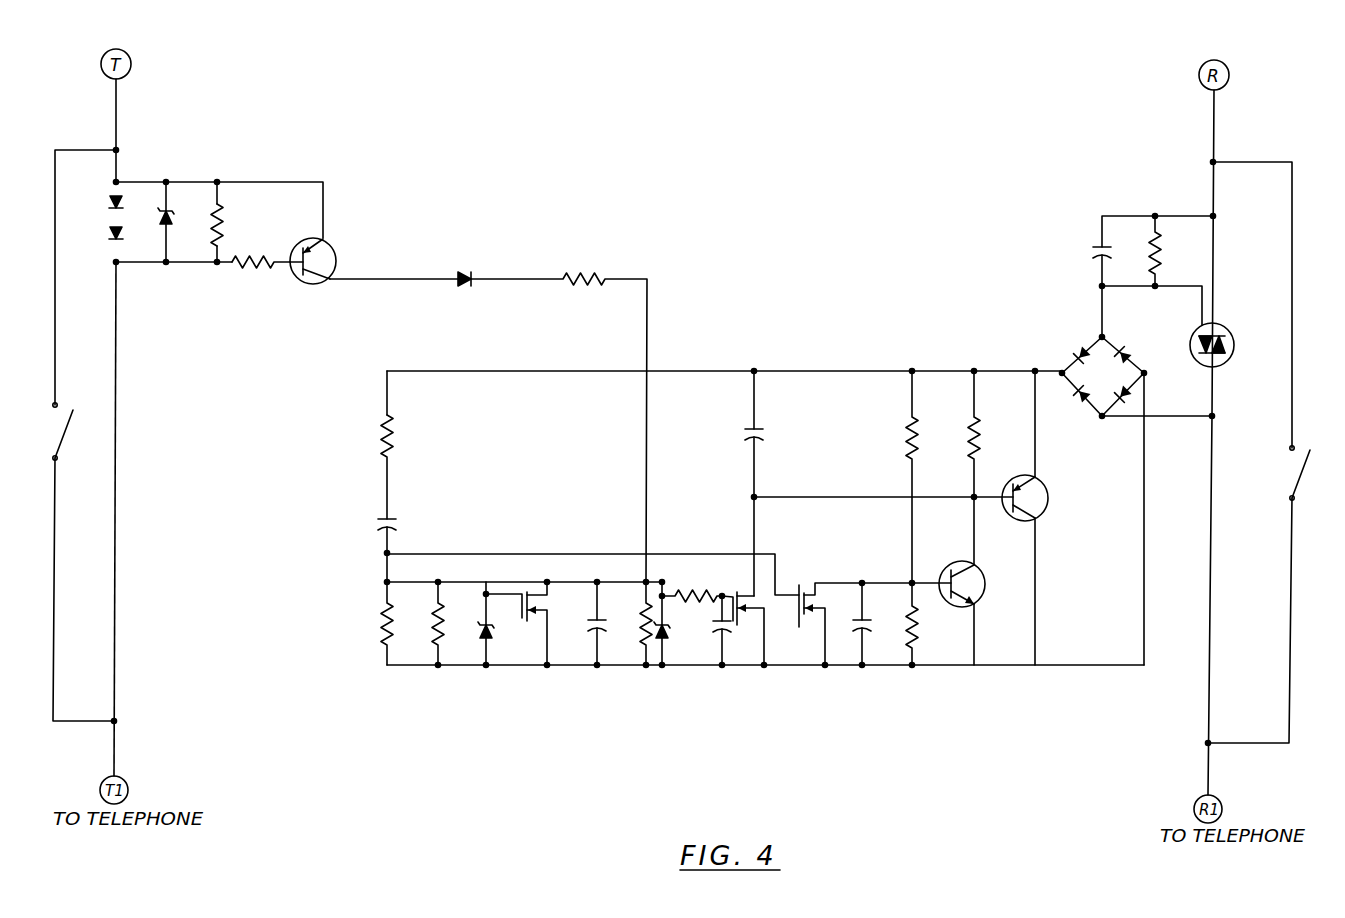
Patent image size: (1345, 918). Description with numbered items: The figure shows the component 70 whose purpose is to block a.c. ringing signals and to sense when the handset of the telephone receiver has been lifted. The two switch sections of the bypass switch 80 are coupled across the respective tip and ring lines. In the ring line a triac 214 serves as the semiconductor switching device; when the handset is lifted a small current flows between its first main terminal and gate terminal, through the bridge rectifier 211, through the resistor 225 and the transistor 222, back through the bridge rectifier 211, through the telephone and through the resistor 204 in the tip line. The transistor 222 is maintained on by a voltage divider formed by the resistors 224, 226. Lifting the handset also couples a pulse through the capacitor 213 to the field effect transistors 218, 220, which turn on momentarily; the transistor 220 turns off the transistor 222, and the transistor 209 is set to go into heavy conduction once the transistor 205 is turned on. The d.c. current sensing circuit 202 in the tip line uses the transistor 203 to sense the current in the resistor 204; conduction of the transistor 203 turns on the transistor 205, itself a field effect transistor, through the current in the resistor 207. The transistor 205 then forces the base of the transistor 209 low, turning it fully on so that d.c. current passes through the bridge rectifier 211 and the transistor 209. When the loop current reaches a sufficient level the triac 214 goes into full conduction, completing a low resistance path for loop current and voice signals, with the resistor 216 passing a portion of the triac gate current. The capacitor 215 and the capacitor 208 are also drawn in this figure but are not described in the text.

The component 70 is at (752, 161).
The bypass switch 80 is at (62, 440).
The d.c. current sensing circuit 202 is at (331, 188).
The transistor 203 is at (313, 284).
The resistor 204 is at (222, 205).
The transistor 205 is at (764, 612).
The resistor 207 is at (646, 638).
The capacitor 208 is at (868, 630).
The transistor 209 is at (1046, 489).
The bridge rectifier 211 is at (1074, 348).
The capacitor 213 is at (392, 518).
The triac 214 is at (1236, 340).
The capacitor 215 is at (760, 426).
The resistor 216 is at (1158, 240).
The transistor 218 is at (528, 575).
The transistor 220 is at (802, 592).
The transistor 222 is at (976, 565).
The resistor 224 is at (908, 435).
The resistor 225 is at (978, 444).
The resistor 226 is at (914, 637).